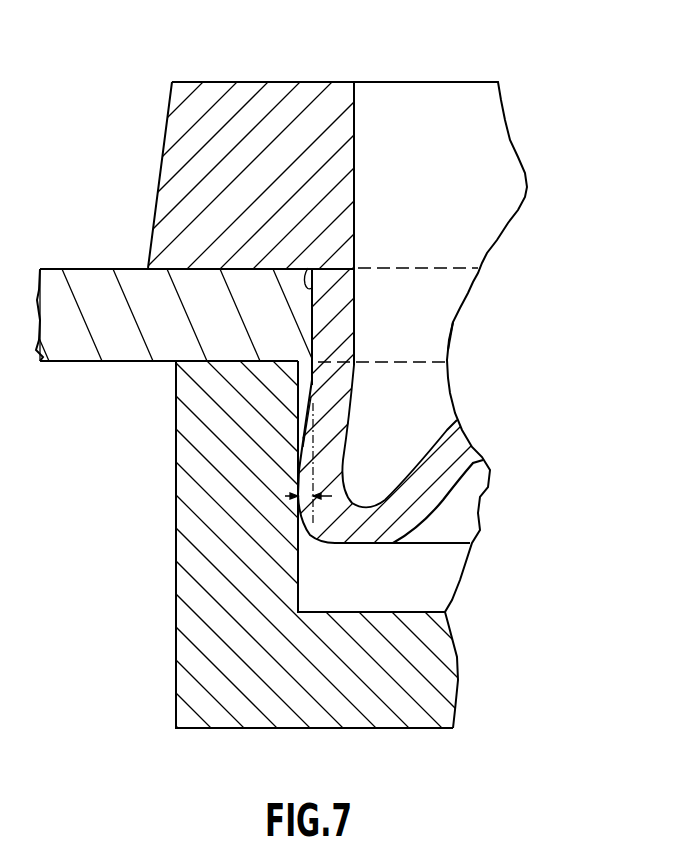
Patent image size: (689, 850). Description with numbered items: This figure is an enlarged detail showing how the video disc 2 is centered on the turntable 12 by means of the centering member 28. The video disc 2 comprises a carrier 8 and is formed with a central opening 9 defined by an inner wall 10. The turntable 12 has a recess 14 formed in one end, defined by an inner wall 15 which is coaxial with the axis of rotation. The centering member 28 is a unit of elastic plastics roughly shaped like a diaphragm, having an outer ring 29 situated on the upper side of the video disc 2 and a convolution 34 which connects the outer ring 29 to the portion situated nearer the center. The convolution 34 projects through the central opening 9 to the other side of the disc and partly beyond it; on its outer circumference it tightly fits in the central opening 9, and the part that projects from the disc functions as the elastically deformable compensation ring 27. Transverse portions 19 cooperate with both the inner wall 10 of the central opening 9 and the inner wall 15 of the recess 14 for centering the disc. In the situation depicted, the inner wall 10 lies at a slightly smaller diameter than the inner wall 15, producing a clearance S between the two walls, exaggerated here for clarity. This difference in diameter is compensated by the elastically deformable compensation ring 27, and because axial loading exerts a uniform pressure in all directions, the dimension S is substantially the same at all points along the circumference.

The video disc 2 is at (43, 269).
The carrier 8 is at (106, 287).
The central opening 9 is at (427, 338).
The inner wall 10 is at (308, 268).
The turntable 12 is at (306, 708).
The recess 14 is at (435, 583).
The inner wall 15 is at (302, 560).
The transverse portions 19 is at (338, 327).
The elastically deformable compensation ring 27 is at (323, 447).
The centering member 28 is at (466, 80).
The outer ring 29 is at (211, 108).
The convolution 34 is at (390, 508).
The clearance S is at (303, 499).